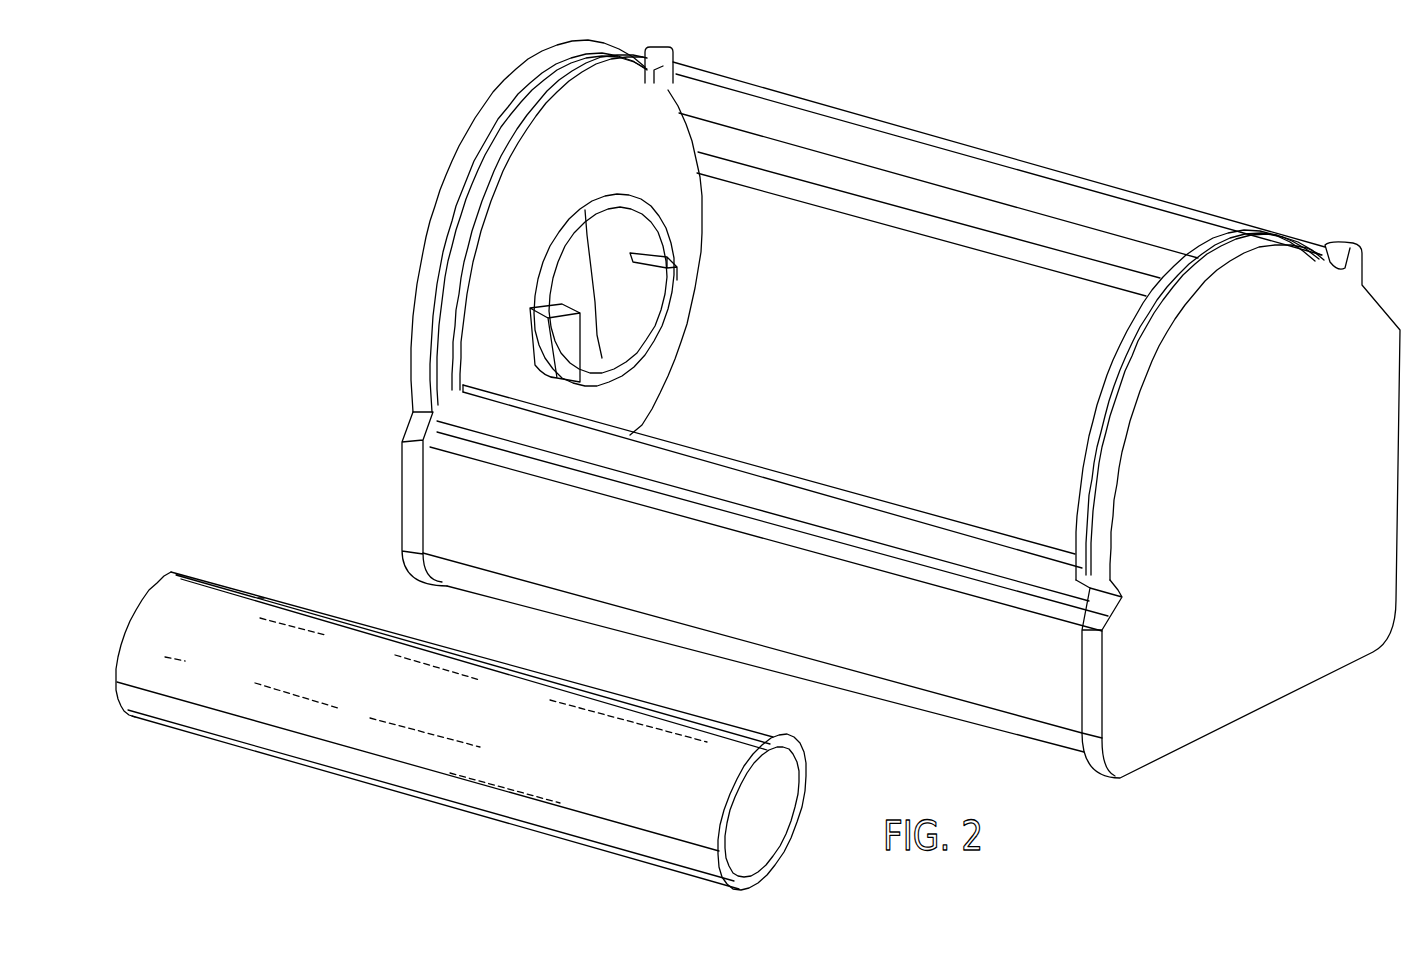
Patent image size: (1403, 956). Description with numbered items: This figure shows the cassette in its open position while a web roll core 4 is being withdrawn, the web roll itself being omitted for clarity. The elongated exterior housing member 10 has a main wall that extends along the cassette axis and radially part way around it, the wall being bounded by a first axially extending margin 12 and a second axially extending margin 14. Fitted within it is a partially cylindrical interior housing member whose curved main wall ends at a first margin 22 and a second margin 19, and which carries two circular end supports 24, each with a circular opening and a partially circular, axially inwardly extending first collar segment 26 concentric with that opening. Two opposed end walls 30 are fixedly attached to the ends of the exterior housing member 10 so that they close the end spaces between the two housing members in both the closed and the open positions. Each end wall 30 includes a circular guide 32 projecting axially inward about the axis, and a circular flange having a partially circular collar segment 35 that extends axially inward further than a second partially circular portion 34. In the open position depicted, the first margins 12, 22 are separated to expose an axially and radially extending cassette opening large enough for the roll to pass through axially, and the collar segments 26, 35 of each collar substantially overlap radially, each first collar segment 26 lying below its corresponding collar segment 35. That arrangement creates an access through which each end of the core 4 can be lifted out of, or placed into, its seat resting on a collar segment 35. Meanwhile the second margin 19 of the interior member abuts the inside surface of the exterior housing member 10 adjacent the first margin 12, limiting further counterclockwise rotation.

The core 4 is at (247, 607).
The exterior housing member 10 is at (864, 409).
The first axially extending margin 12 is at (955, 167).
The second axially extending margin 14 is at (720, 517).
The second margin 19 is at (860, 205).
The first margin 22 is at (853, 523).
The circular end support 24 is at (595, 245).
The first collar segment 26 is at (637, 345).
The end wall 30 is at (864, 409).
The circular guide 32 is at (423, 308).
The second partially circular portion 34 is at (607, 220).
The collar segment 35 is at (630, 298).